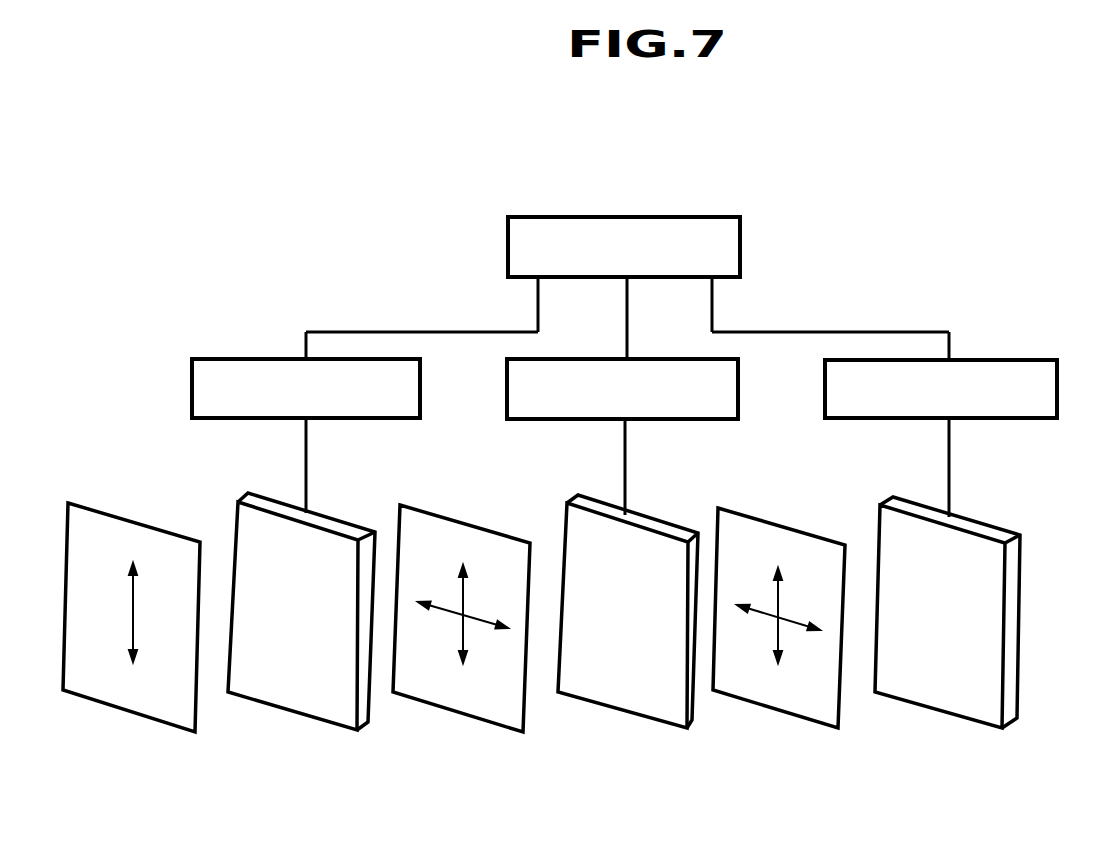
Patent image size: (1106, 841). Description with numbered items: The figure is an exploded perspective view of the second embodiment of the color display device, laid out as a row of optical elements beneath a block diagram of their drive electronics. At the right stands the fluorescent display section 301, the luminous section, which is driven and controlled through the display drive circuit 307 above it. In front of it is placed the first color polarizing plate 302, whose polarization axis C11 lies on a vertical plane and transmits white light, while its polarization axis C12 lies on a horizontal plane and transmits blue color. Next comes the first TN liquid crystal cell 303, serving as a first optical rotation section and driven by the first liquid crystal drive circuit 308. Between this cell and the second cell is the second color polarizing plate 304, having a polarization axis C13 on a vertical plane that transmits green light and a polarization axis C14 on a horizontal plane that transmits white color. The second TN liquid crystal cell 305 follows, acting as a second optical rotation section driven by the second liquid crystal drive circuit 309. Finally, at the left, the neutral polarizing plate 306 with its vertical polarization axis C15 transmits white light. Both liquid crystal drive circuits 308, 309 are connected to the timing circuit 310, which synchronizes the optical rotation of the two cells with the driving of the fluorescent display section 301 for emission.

The timing circuit 310 is at (674, 217).
The second liquid crystal drive circuit 309 is at (240, 359).
The first liquid crystal drive circuit 308 is at (672, 359).
The display drive circuit 307 is at (1029, 360).
The neutral polarizing plate 306 is at (127, 710).
The TN liquid crystal cell 305 is at (292, 710).
The second color polarizing plate 304 is at (450, 710).
The TN liquid crystal cell 303 is at (616, 708).
The first color polarizing plate 302 is at (762, 708).
The fluorescent display section 301 is at (922, 708).
The polarization axis C15 is at (133, 628).
The polarization axis C14 is at (450, 610).
The polarization axis C13 is at (468, 630).
The polarization axis C12 is at (767, 610).
The polarization axis C11 is at (783, 632).